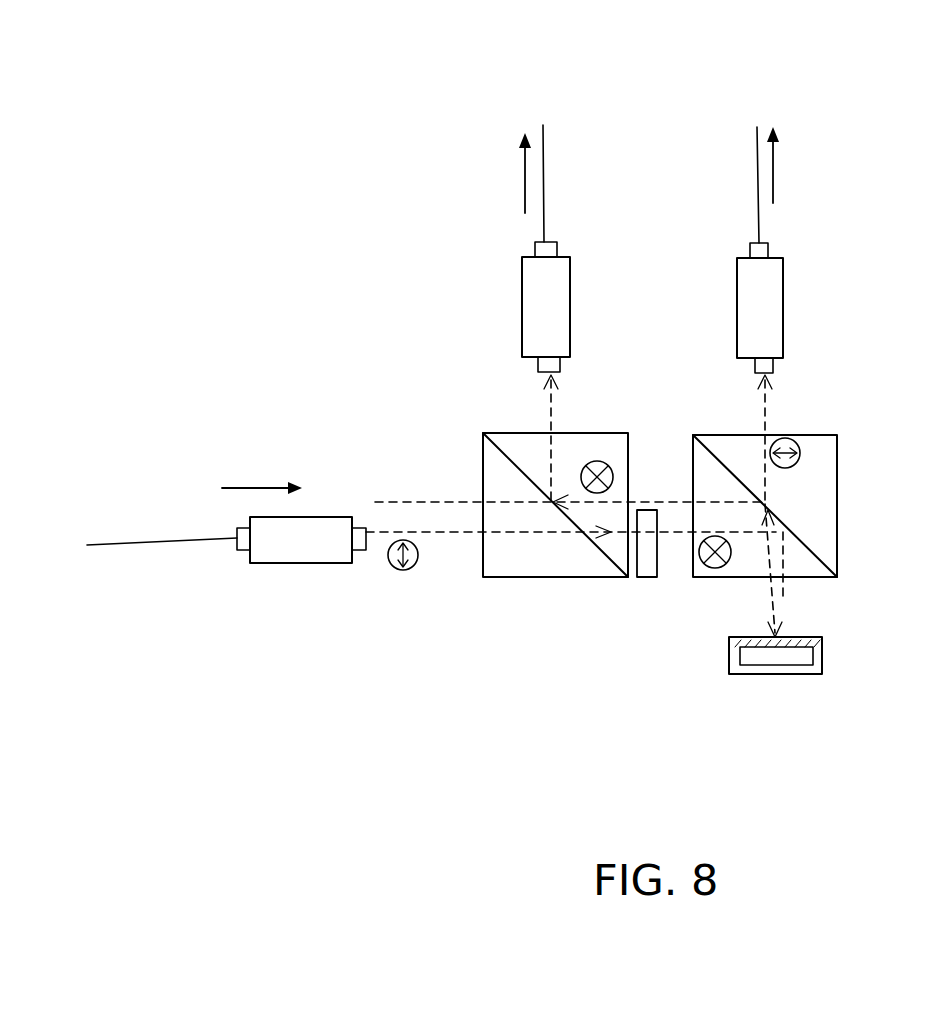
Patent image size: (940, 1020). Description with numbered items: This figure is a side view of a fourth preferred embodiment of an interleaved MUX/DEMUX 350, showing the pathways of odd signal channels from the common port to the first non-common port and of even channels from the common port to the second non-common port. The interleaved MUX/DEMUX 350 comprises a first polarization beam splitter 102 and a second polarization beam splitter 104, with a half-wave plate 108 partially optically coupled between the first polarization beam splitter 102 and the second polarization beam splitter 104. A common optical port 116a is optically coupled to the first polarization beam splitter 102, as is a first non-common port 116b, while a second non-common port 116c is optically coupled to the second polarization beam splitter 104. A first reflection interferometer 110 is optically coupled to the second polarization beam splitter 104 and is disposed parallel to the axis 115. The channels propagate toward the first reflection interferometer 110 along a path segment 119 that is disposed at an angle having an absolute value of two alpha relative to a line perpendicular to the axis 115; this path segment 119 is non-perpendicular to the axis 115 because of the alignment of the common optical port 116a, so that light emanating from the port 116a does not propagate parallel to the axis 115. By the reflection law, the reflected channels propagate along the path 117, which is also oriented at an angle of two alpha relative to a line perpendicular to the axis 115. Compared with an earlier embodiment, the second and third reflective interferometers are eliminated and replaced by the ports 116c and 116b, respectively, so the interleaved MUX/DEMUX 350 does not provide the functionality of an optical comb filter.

The interleaved MUX/DEMUX 350 is at (471, 34).
The first polarization beam splitter 102 is at (483, 553).
The second polarization beam splitter 104 is at (837, 563).
The half-wave plate 108 is at (647, 580).
The first reflection interferometer 110 is at (808, 674).
The axis 115 is at (415, 502).
The common optical port 116a is at (365, 575).
The first non-common port 116b is at (517, 238).
The second non-common port 116c is at (800, 235).
The path 117 is at (770, 590).
The path segment 119 is at (780, 597).